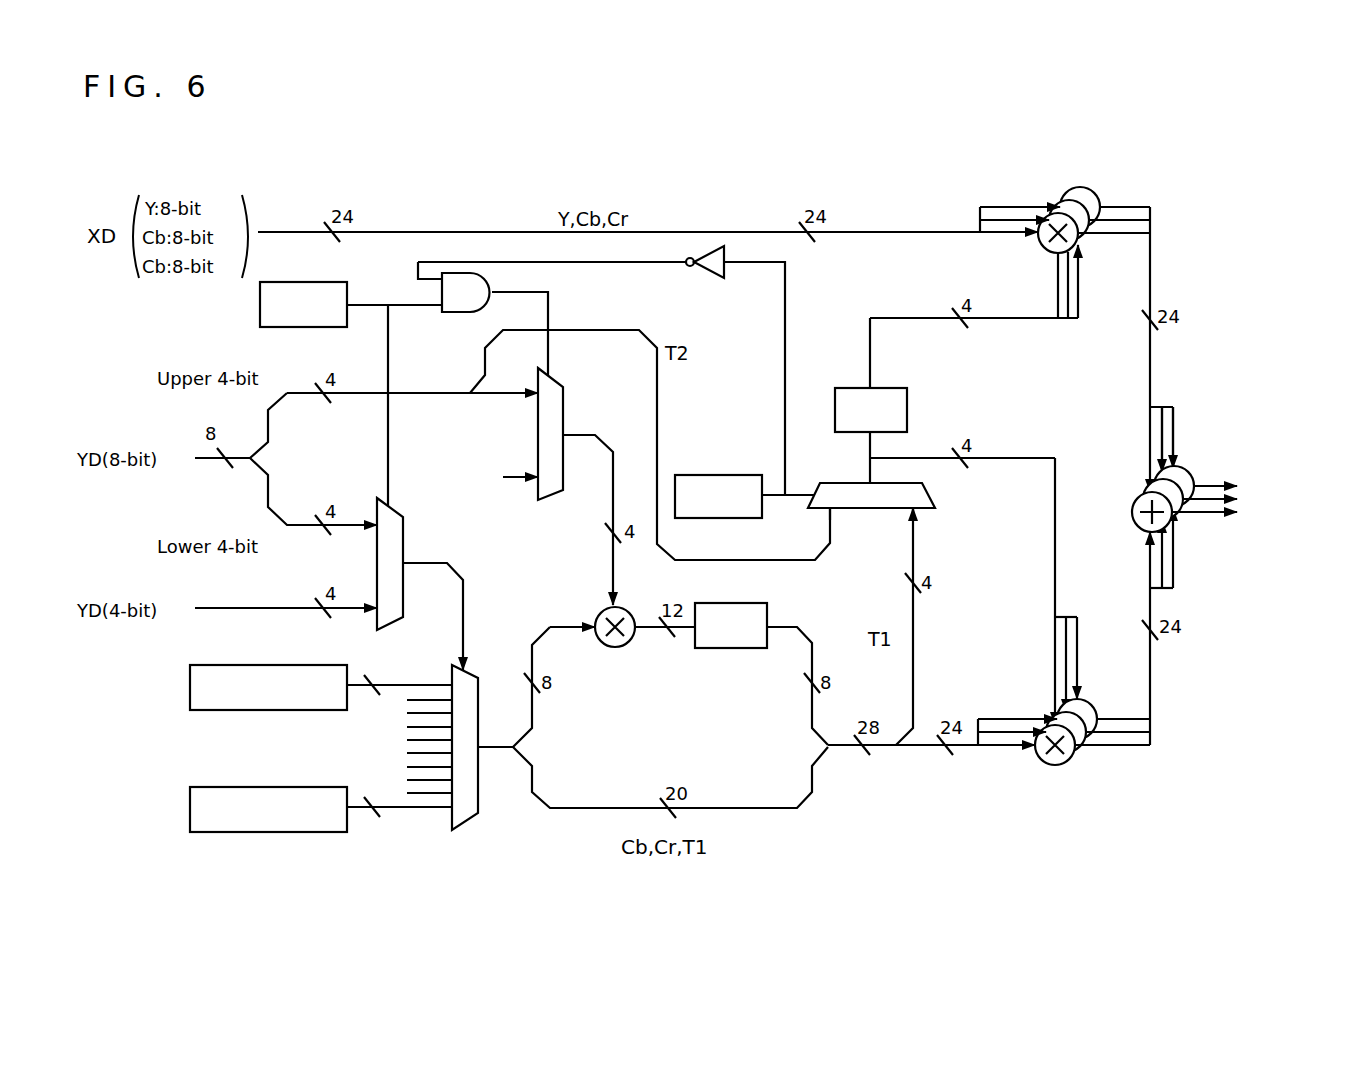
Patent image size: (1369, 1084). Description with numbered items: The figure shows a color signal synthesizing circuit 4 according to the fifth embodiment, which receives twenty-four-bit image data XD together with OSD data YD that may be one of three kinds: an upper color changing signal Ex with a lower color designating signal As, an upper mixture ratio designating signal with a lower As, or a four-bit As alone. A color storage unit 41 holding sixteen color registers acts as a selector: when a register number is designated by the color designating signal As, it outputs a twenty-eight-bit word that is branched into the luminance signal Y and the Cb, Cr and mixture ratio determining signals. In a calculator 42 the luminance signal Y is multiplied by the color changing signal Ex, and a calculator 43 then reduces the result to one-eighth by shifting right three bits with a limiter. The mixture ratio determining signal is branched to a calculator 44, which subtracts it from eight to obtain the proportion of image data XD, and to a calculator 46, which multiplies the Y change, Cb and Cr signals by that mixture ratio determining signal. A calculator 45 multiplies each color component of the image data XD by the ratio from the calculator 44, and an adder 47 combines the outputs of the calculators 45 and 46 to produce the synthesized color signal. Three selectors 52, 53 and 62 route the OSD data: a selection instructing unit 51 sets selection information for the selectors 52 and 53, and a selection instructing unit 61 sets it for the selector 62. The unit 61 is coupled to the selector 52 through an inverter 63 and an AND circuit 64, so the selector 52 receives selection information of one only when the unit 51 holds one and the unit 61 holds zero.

The color signal synthesizing circuit 4 is at (1184, 183).
The color storage unit 41 is at (157, 757).
The calculator 42 is at (616, 648).
The calculator 43 is at (768, 607).
The calculator 44 is at (908, 408).
The calculator 45 is at (1108, 178).
The calculator 46 is at (1055, 780).
The adder 47 is at (1201, 533).
The selection instructing unit 51 is at (310, 283).
The selector 52 is at (565, 410).
The selector 53 is at (404, 540).
The selection instructing unit 61 is at (717, 475).
The selector 62 is at (936, 496).
The inverter 63 is at (703, 279).
The AND circuit 64 is at (455, 313).